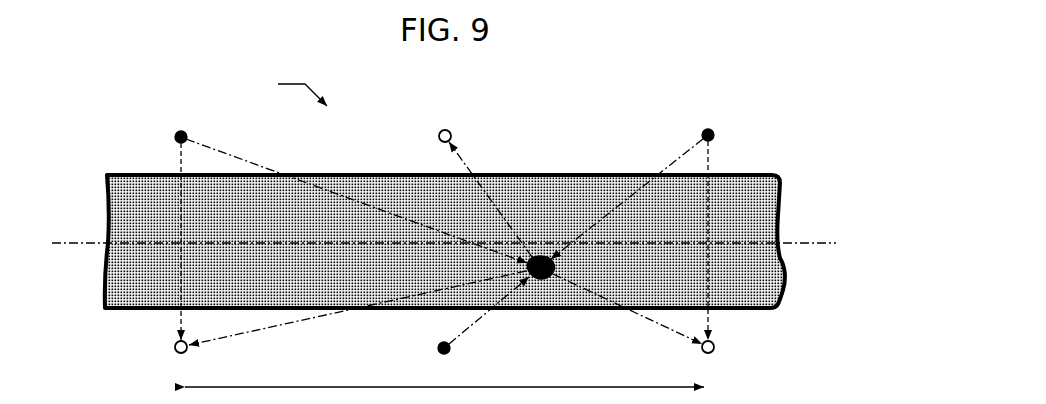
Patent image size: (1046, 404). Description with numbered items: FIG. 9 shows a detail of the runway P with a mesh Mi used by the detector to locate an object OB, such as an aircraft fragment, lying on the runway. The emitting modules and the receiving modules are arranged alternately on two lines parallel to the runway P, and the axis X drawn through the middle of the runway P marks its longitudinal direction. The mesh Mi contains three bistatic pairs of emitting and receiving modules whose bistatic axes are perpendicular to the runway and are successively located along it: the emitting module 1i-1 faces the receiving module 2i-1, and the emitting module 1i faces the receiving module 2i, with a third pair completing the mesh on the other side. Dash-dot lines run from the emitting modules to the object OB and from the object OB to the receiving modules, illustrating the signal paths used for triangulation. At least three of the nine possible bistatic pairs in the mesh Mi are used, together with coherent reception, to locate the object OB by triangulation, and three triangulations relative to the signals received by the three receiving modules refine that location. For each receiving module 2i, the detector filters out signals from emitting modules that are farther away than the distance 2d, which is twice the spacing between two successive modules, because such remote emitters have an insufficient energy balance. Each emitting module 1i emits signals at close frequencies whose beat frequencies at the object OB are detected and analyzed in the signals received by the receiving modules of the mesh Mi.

The runway P is at (757, 229).
The axis X is at (444, 245).
The mesh Mi is at (302, 85).
The object OB is at (546, 258).
The emitting module 1i-1 is at (174, 137).
The emitting module 1i is at (451, 348).
The receiving module 2i-1 is at (174, 347).
The receiving module 2i is at (452, 136).
The double of the distance between two successive modules 2d is at (444, 378).